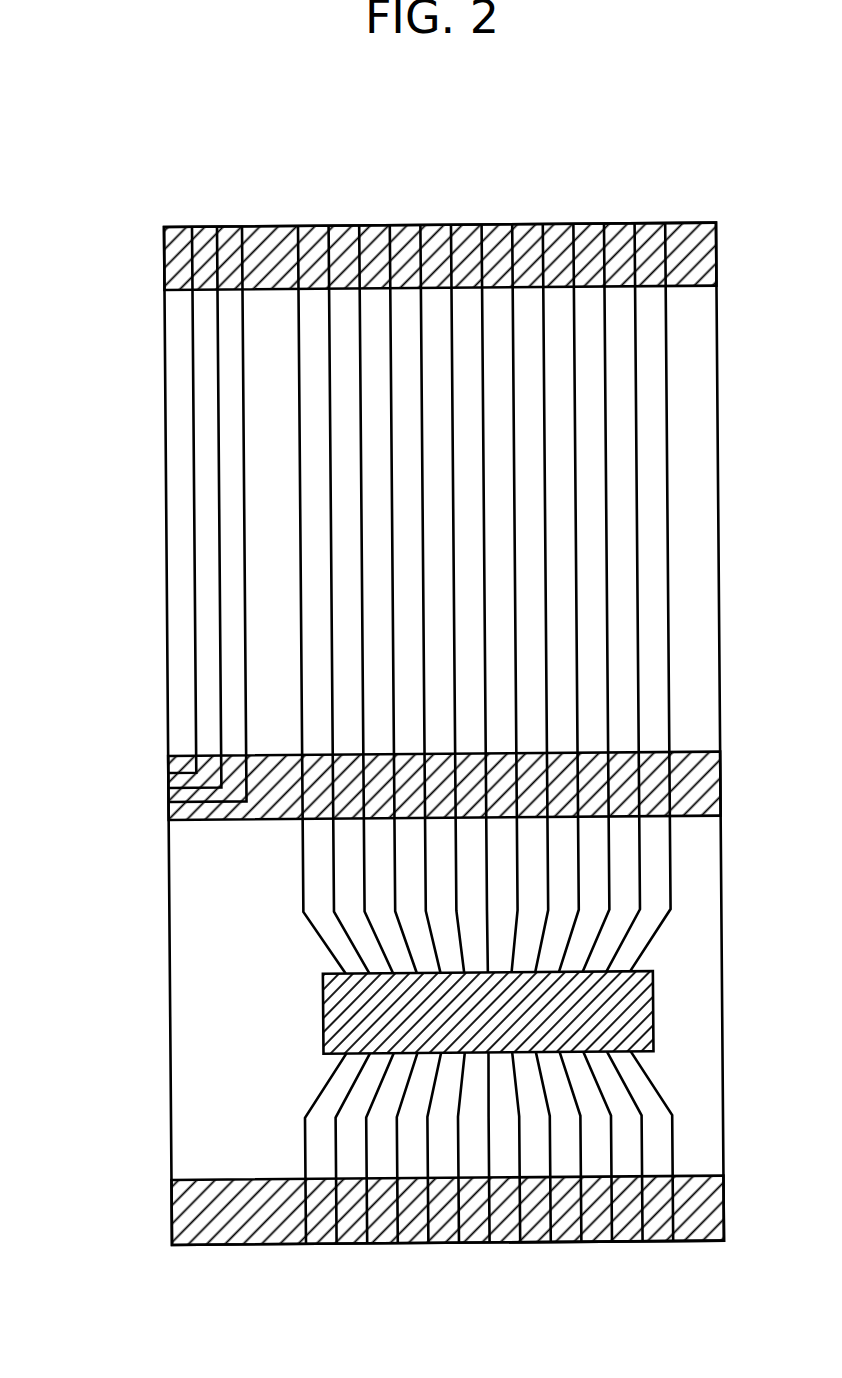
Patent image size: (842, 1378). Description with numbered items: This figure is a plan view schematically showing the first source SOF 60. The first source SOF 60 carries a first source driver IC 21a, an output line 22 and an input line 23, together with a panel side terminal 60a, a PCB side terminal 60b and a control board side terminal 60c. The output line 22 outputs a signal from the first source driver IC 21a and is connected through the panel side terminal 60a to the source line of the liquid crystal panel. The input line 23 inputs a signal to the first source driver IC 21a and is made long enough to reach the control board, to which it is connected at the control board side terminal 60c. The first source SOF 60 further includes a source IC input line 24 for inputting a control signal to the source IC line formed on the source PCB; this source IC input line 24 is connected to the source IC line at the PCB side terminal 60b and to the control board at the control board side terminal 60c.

The first source SOF 60 is at (205, 1082).
The panel side terminal 60a is at (238, 1220).
The PCB side terminal 60b is at (208, 817).
The control board side terminal 60c is at (695, 247).
The first source driver IC 21a is at (333, 1000).
The output line 22 is at (303, 1258).
The input line 23 is at (288, 212).
The source IC input line 24 is at (257, 212).